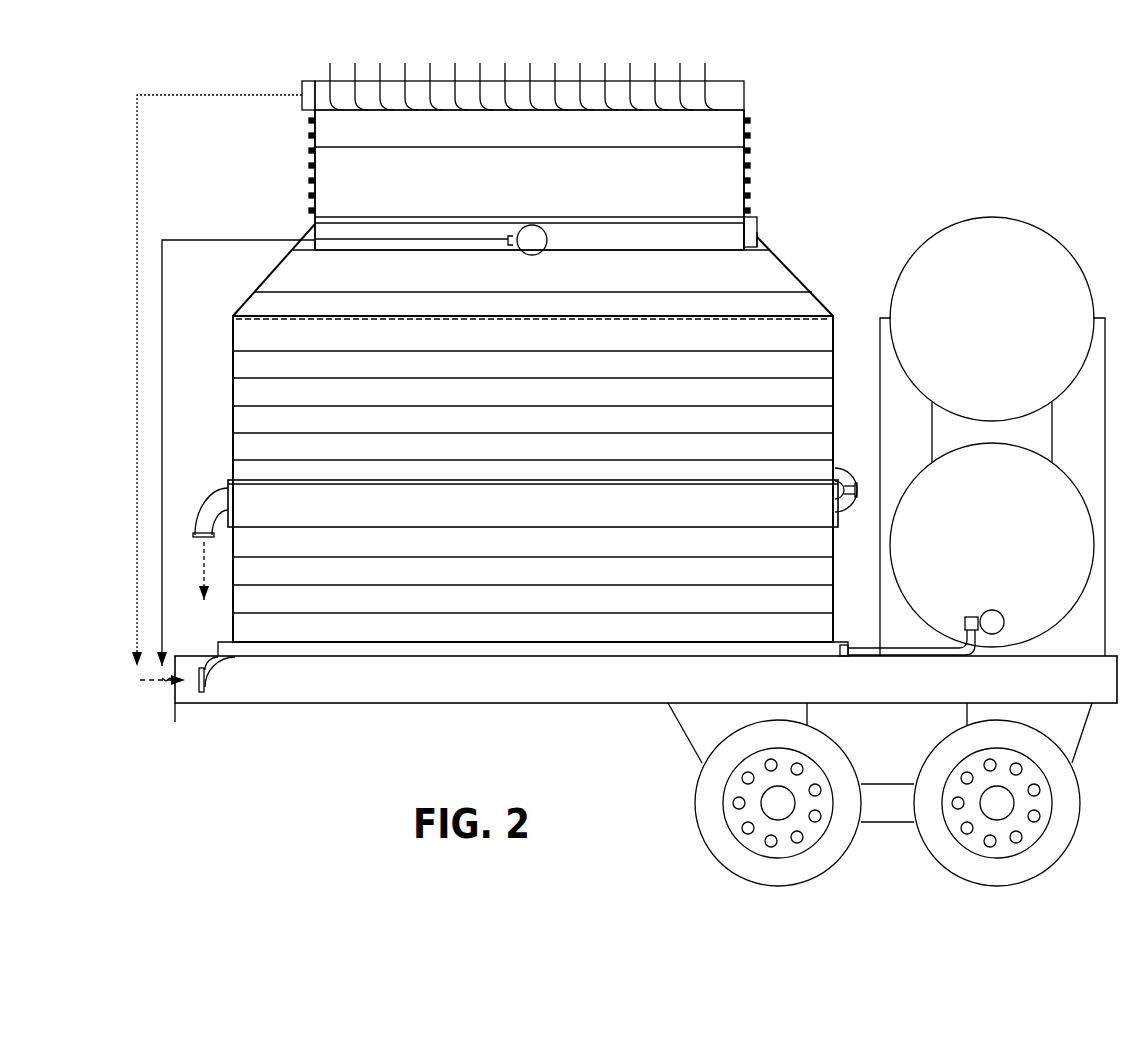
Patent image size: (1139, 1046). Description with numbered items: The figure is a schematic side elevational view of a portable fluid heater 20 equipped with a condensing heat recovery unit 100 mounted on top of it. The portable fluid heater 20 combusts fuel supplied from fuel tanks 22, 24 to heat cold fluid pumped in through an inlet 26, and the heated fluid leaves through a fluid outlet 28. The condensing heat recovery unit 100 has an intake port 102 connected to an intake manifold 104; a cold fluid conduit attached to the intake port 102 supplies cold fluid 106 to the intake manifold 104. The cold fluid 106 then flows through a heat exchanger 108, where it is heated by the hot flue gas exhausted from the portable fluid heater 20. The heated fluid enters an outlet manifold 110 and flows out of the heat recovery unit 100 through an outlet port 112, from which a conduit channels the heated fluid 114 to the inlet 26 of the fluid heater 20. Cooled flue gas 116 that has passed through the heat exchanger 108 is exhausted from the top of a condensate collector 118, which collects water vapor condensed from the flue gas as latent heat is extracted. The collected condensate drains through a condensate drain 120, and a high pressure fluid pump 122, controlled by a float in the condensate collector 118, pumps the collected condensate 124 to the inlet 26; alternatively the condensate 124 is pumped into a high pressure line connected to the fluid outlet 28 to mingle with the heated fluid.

The portable fluid heater 20 is at (843, 278).
The fuel tank 22 is at (992, 319).
The fuel tank 24 is at (992, 545).
The inlet 26 is at (205, 690).
The fluid outlet 28 is at (217, 503).
The condensing heat recovery unit 100 is at (772, 147).
The intake port 102 is at (757, 218).
The intake manifold 104 is at (598, 226).
The cold fluid 106 is at (760, 232).
The heat exchanger 108 is at (313, 158).
The outlet manifold 110 is at (744, 90).
The outlet port 112 is at (302, 88).
The heated fluid 114 is at (139, 149).
The cooled flue gas 116 is at (713, 73).
The condensate collector 118 is at (728, 138).
The condensate drain 120 is at (528, 226).
The high pressure fluid pump 122 is at (538, 250).
The collected condensate 124 is at (202, 238).